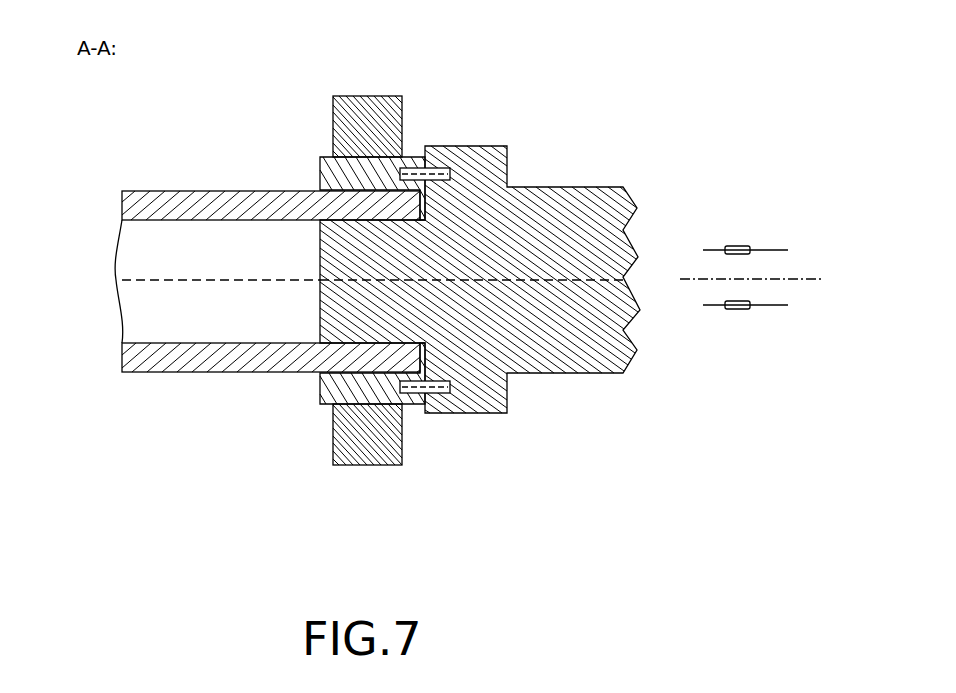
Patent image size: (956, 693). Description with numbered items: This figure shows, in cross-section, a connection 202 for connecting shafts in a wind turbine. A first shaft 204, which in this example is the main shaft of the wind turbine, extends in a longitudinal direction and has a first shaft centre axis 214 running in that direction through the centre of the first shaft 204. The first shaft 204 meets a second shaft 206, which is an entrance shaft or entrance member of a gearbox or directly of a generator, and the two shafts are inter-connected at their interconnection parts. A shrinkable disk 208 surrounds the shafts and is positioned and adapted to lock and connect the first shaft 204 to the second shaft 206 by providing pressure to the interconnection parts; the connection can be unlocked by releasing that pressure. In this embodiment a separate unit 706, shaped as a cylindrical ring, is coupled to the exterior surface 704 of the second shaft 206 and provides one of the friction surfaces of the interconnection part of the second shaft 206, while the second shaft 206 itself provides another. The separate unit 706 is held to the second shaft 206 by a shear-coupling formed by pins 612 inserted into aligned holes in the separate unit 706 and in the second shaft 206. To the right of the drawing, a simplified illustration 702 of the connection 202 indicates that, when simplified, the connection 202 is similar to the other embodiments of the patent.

The connection 202 is at (266, 450).
The first shaft 204 is at (250, 190).
The second shaft 206 is at (535, 187).
The shrinkable disk 208 is at (402, 100).
The first shaft centre axis 214 is at (143, 281).
The pins 612 is at (448, 390).
The simplified illustration 702 is at (795, 235).
The exterior surface of the second shaft 704 is at (430, 404).
The separate unit 706 is at (403, 158).